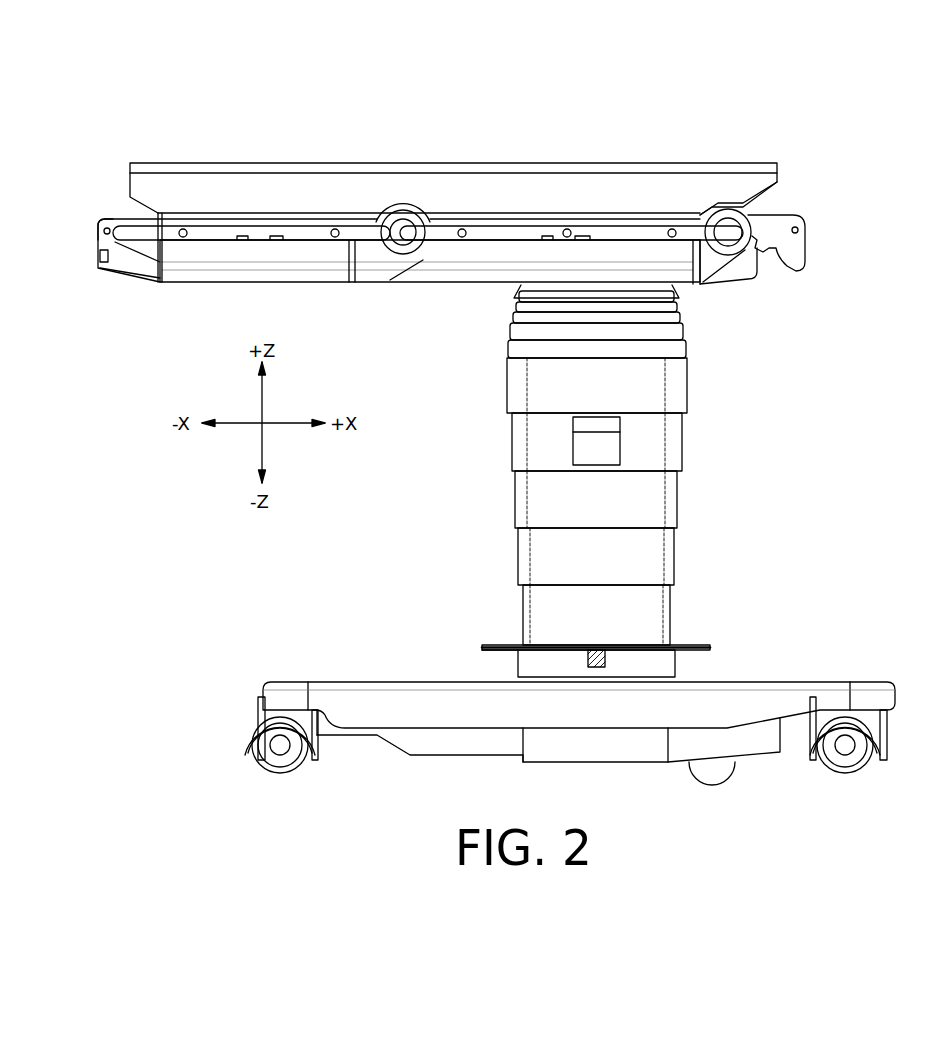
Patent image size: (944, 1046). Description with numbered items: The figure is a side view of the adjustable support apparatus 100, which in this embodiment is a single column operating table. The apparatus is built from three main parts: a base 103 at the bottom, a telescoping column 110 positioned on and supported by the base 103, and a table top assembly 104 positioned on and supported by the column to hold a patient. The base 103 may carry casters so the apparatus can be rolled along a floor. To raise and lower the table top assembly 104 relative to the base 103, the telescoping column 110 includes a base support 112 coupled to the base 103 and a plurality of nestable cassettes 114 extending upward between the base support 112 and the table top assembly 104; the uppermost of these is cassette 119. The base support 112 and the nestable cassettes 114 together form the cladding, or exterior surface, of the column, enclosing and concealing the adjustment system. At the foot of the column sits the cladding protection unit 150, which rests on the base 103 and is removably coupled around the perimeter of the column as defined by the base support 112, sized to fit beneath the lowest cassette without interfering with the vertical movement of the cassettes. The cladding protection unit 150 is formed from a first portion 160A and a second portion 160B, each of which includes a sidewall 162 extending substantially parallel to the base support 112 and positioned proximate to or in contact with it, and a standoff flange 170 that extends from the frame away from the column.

The adjustable support apparatus 100 is at (758, 113).
The base 103 is at (360, 675).
The table top assembly 104 is at (442, 162).
The telescoping column 110 is at (760, 425).
The base support 112 is at (673, 642).
The plurality of nestable cassettes 114 is at (765, 468).
The cassette 119 is at (687, 382).
The cladding protection unit 150 is at (728, 647).
The first portion 160A is at (485, 668).
The second portion 160B is at (778, 665).
The sidewall 162 is at (676, 660).
The standoff flange 170 is at (503, 652).